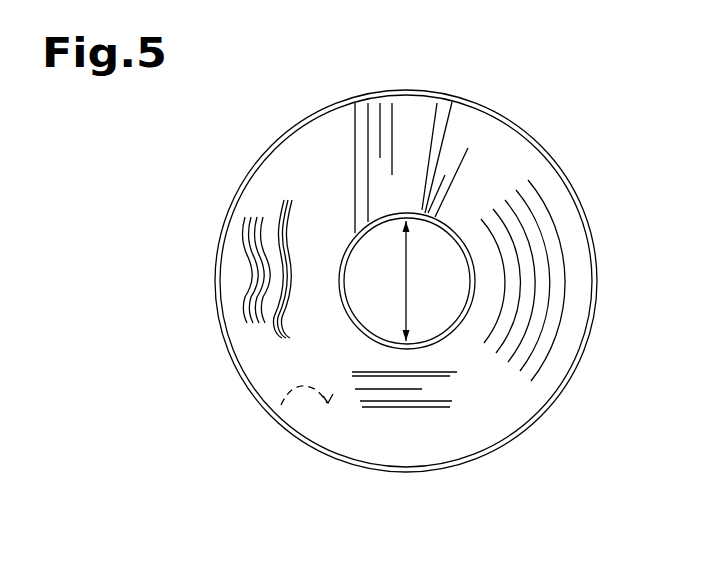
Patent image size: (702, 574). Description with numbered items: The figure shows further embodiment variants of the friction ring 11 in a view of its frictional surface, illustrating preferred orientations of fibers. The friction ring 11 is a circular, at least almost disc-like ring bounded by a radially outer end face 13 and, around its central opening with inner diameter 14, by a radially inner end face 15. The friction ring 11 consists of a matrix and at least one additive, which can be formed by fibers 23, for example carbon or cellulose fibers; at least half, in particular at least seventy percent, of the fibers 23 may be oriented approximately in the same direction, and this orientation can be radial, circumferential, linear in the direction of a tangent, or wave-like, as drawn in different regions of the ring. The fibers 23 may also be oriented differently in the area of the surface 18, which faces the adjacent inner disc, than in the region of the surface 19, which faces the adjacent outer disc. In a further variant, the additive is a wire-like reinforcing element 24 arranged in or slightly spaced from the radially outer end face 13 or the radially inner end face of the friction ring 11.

The friction ring 11 is at (562, 151).
The radially outer end face 13 is at (586, 347).
The inner diameter 14 is at (418, 260).
The radially inner end face 15 is at (462, 307).
The surface 18 is at (305, 170).
The surface 19 is at (281, 405).
The fibers 23 is at (420, 147).
The wire-like reinforcing element 24 is at (484, 100).